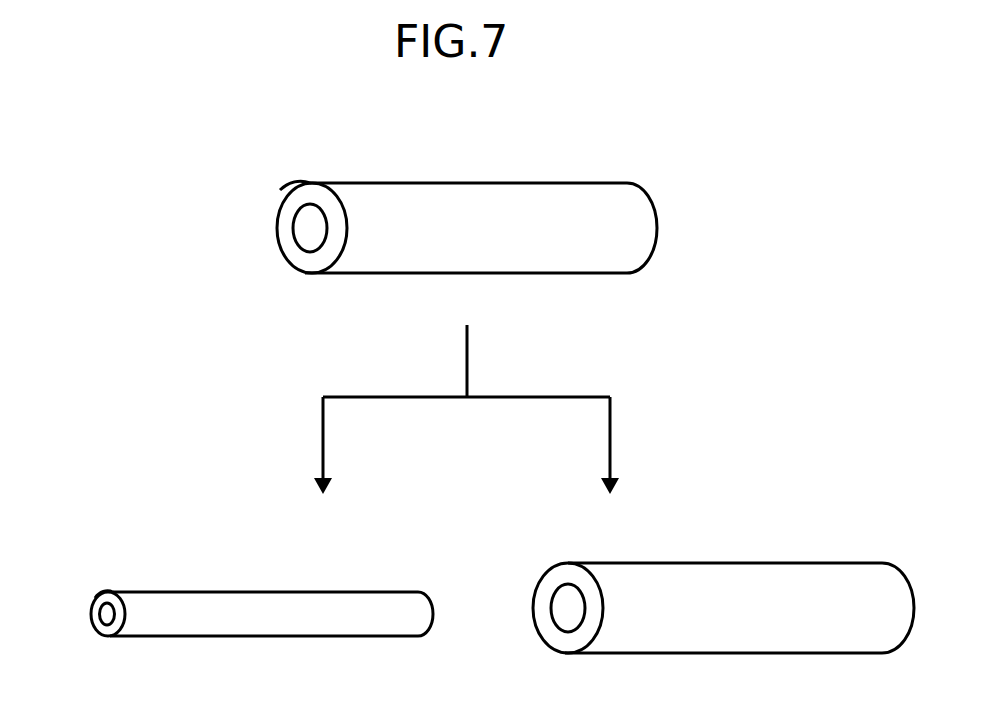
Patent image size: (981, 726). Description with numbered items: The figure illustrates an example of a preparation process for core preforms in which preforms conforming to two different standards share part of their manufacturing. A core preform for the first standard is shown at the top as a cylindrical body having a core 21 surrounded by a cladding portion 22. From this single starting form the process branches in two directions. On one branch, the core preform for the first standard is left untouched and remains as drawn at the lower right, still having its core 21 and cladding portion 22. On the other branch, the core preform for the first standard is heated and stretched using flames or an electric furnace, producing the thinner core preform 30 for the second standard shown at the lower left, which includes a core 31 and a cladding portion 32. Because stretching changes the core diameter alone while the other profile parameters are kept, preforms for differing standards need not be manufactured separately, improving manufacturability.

The core 21 is at (305, 228).
The cladding portion 22 is at (310, 194).
The core preform for the second standard 30 is at (186, 572).
The core 31 is at (103, 613).
The cladding portion 32 is at (103, 597).